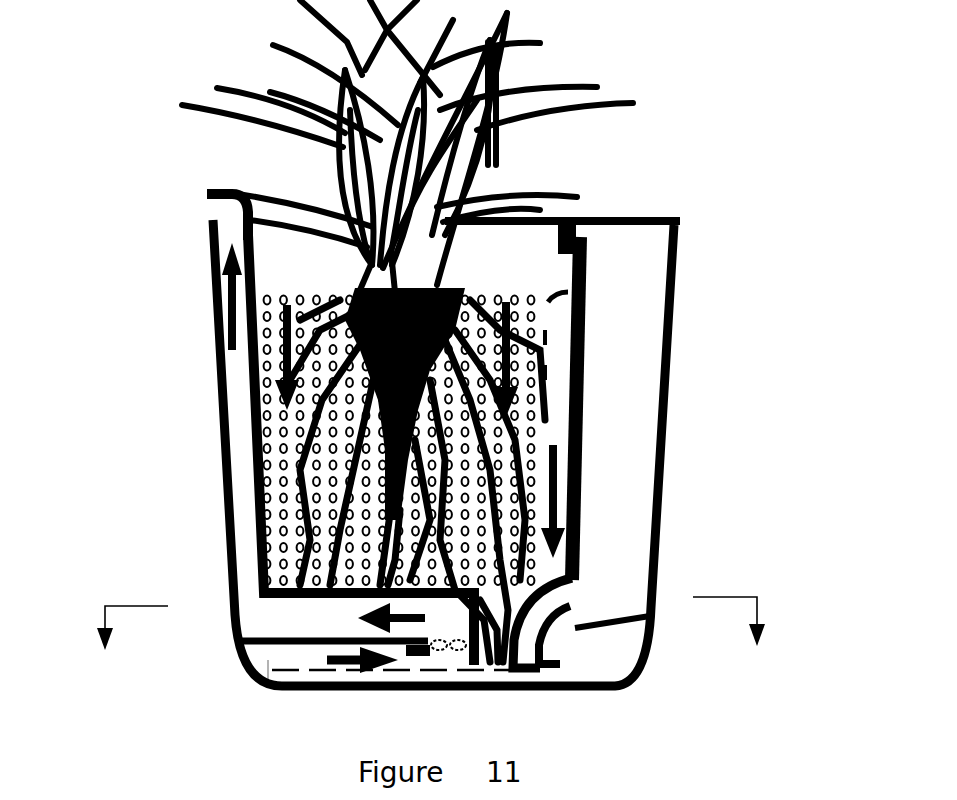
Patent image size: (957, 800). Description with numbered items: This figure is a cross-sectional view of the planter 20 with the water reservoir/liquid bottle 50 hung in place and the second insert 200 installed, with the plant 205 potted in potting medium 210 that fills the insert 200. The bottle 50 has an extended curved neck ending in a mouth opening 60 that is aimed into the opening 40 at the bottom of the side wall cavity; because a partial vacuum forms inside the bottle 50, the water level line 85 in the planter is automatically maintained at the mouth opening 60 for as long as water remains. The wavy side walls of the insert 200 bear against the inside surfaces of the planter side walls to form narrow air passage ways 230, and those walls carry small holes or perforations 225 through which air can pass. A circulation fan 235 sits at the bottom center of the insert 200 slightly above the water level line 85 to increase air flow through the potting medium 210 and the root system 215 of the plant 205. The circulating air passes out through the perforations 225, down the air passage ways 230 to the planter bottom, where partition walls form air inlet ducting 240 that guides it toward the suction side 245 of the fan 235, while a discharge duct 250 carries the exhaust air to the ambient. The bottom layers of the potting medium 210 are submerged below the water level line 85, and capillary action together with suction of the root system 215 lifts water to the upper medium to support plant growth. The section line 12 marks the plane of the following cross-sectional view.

The planter 20 is at (178, 207).
The water reservoir/liquid bottle 50 is at (681, 253).
The second insert 200 is at (255, 445).
The potting medium 210 is at (280, 306).
The plant 205 is at (487, 187).
The root system 215 is at (298, 525).
The discharge duct 250 is at (235, 405).
The air passage ways 230 is at (558, 330).
The perforations 225 is at (540, 400).
The suction side 245 is at (445, 658).
The circulation fan 235 is at (447, 652).
The water level line 85 is at (282, 672).
The air inlet ducting 240 is at (317, 657).
The opening 40 is at (528, 670).
The mouth opening 60 is at (549, 672).
The section line 12— 12 is at (436, 640).